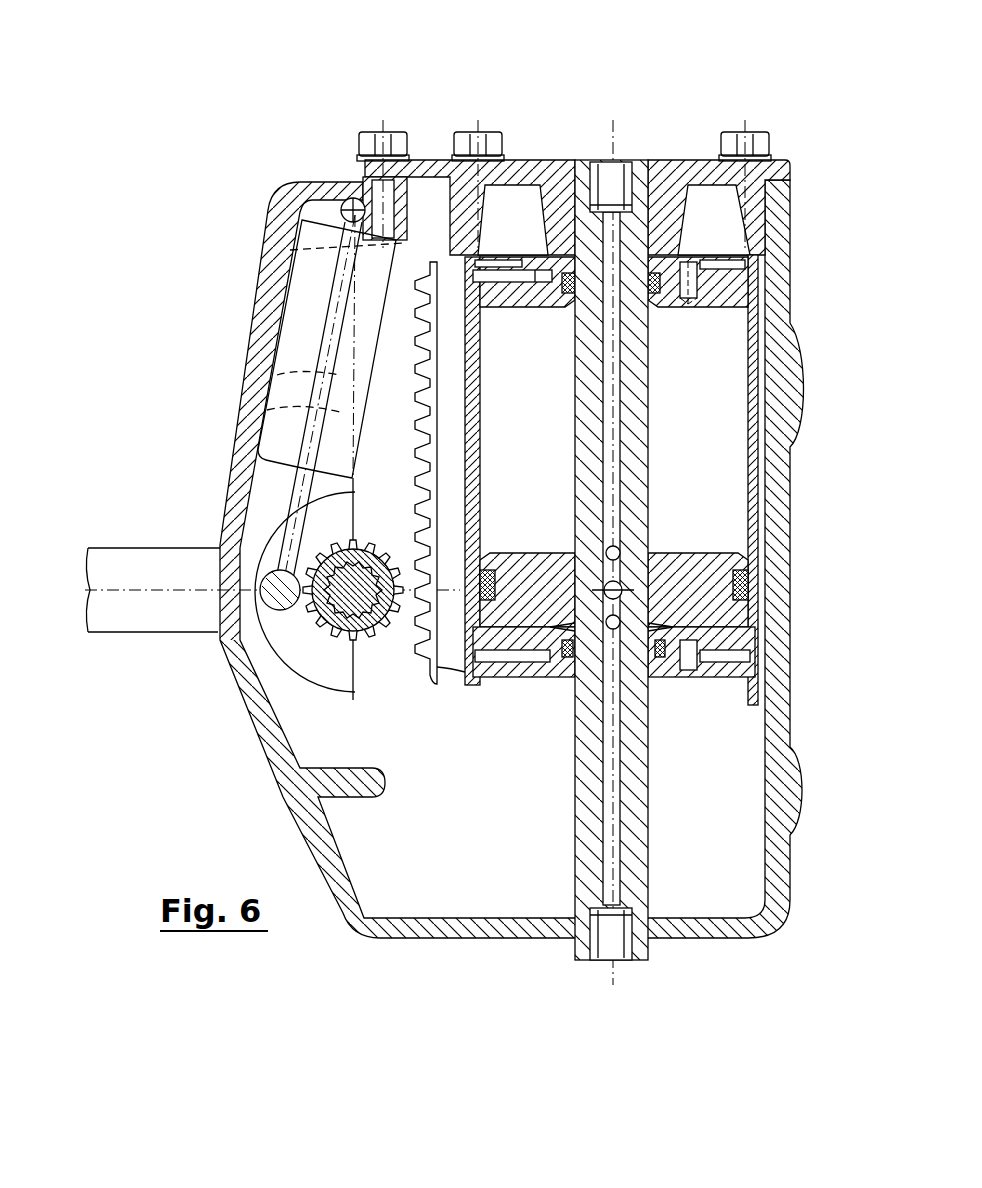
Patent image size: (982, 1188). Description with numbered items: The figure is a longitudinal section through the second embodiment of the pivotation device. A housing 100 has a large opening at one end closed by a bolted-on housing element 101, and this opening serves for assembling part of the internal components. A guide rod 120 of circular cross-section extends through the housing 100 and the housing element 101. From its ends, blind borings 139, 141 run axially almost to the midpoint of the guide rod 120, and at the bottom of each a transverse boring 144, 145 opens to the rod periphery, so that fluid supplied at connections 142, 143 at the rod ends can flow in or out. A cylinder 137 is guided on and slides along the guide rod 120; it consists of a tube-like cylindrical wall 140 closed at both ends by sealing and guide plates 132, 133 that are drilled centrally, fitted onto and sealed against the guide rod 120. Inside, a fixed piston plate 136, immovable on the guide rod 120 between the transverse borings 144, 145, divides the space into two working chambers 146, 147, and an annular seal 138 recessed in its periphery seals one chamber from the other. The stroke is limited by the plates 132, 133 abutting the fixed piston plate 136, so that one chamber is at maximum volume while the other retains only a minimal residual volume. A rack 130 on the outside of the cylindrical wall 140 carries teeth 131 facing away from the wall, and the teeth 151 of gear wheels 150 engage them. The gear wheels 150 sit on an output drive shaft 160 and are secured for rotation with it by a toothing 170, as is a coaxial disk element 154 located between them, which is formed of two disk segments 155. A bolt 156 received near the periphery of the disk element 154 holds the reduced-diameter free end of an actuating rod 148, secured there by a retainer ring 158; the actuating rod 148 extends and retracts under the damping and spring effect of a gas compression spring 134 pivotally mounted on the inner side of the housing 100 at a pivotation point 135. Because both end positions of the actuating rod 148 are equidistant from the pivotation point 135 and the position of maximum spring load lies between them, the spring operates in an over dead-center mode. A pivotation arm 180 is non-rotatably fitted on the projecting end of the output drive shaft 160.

The housing 100 is at (445, 930).
The housing element 101 is at (675, 195).
The guide rod 120 is at (627, 553).
The rack 130 is at (450, 368).
The teeth 131 is at (423, 395).
The sealing and guide plate 132 is at (705, 293).
The sealing and guide plate 133 is at (647, 620).
The gas compression spring 134 is at (320, 290).
The pivotation point 135 is at (351, 206).
The fixed piston plate 136 is at (705, 587).
The cylinder 137 is at (763, 330).
The annular seal 138 is at (740, 590).
The blind boring 139 is at (620, 395).
The cylindrical wall 140 is at (470, 445).
The blind boring 141 is at (612, 848).
The connection 142 is at (612, 185).
The connection 143 is at (613, 940).
The transverse boring 144 is at (605, 552).
The transverse boring 145 is at (607, 626).
The working chamber 146 is at (697, 460).
The working chamber 147 is at (703, 634).
The actuating rod 148 is at (293, 485).
The gear wheel 150 is at (390, 655).
The teeth 151 is at (398, 658).
The disk element 154 is at (262, 635).
The disk segment 155 is at (345, 606).
The bolt 156 is at (255, 558).
The retainer ring 158 is at (287, 610).
The output drive shaft 160 is at (320, 617).
The toothing 170 is at (303, 653).
The pivotation arm 180 is at (152, 560).